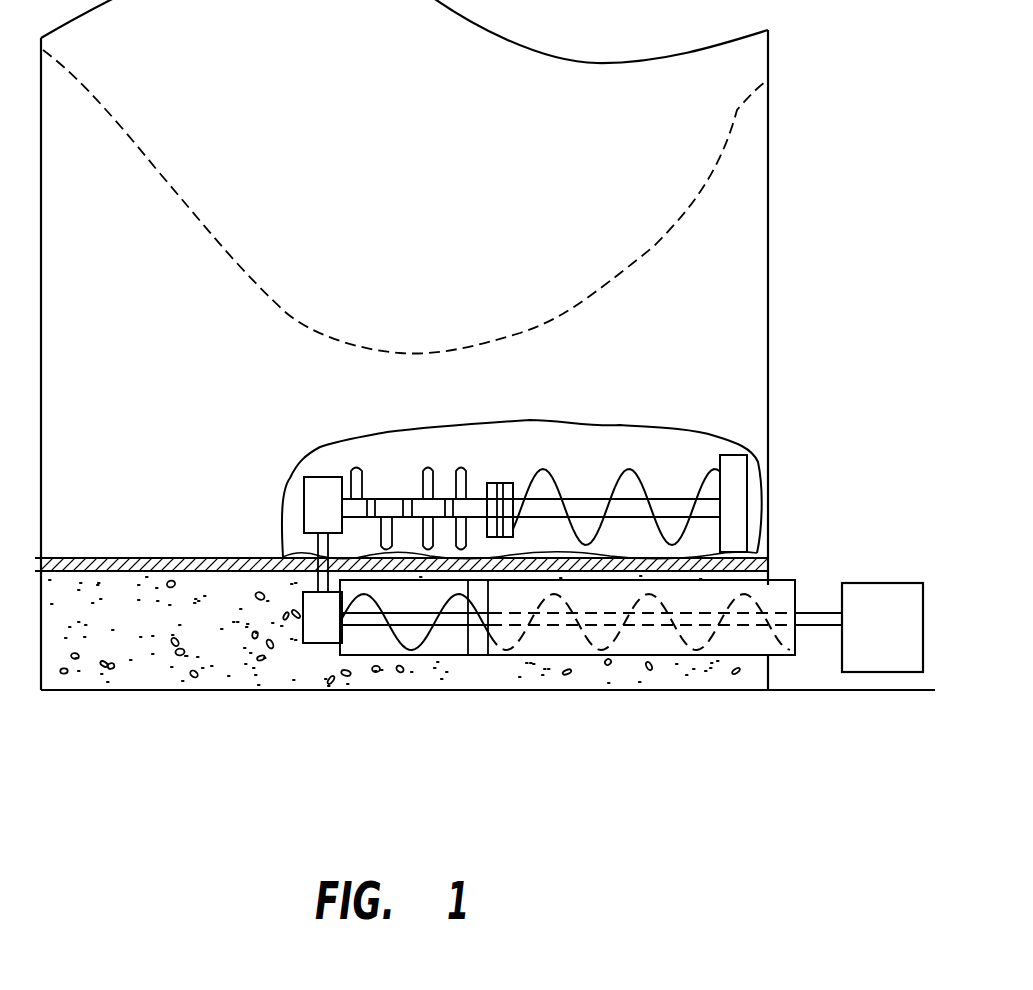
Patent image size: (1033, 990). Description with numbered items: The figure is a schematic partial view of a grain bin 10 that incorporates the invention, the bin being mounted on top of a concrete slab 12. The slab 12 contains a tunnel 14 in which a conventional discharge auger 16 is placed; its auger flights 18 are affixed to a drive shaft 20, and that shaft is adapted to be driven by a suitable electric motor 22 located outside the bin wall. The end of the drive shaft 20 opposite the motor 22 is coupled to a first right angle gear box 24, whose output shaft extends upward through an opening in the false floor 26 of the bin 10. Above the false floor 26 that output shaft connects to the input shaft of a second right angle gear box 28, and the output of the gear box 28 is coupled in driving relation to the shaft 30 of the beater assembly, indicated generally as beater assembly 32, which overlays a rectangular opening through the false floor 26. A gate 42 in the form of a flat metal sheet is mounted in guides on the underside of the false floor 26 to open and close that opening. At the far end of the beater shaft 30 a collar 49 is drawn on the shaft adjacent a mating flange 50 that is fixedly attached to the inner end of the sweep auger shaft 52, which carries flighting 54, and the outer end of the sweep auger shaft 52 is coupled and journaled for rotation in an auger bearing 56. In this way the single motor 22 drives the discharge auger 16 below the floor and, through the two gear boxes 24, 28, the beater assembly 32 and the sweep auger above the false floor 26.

The grain bin 10 is at (770, 292).
The concrete slab 12 is at (148, 668).
The tunnel 14 is at (360, 655).
The discharge auger 16 is at (420, 652).
The auger flights 18 is at (435, 627).
The drive shaft 20 is at (817, 615).
The electric motor 22 is at (903, 582).
The first right angle gear box 24 is at (303, 627).
The false floor 26 is at (212, 558).
The second right angle gear box 28 is at (310, 478).
The shaft of beater assembly 30 is at (387, 500).
The beater assembly 32 is at (413, 467).
The gate 42 is at (395, 580).
The collar 49 is at (500, 483).
The mating flange 50 is at (500, 483).
The sweep auger shaft 52 is at (583, 498).
The flighting 54 is at (643, 470).
The auger bearing 56 is at (737, 477).